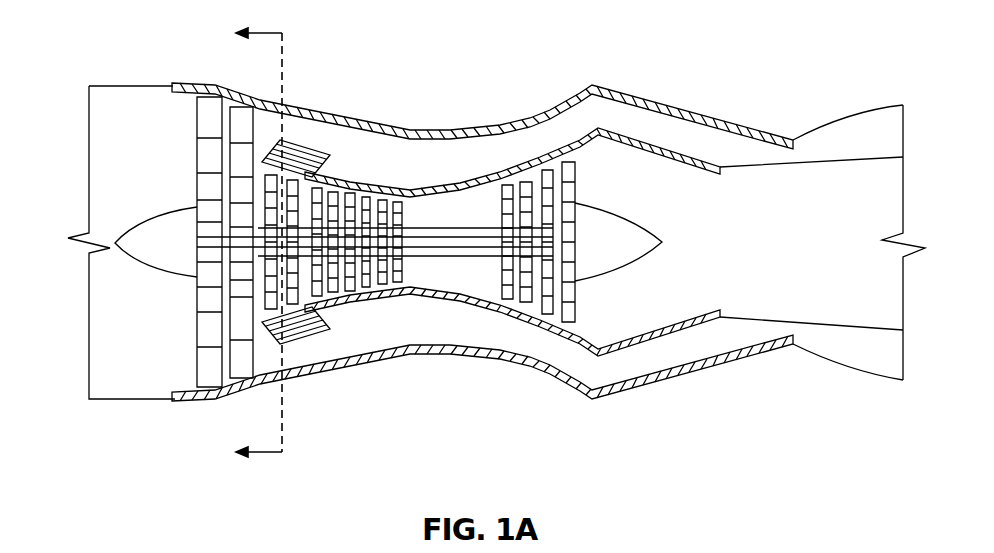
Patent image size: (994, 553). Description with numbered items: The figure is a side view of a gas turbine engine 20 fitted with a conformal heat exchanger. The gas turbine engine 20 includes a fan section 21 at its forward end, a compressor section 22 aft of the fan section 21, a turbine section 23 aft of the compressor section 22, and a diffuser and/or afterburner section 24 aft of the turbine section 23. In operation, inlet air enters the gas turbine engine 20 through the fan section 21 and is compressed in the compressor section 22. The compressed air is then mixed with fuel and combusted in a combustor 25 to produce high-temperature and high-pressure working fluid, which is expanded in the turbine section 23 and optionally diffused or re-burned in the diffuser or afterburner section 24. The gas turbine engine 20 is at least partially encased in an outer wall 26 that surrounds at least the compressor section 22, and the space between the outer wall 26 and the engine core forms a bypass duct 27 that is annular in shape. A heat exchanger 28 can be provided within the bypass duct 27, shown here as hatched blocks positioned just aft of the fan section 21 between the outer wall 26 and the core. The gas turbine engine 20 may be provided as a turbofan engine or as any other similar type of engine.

The gas turbine engine 20 is at (94, 38).
The fan section 21 is at (105, 157).
The compressor section 22 is at (210, 378).
The turbine section 23 is at (712, 240).
The diffuser and/or afterburner section 24 is at (878, 213).
The combustor 25 is at (454, 270).
The outer wall 26 is at (448, 128).
The bypass duct 27 is at (497, 157).
The heat exchanger 28 is at (301, 150).